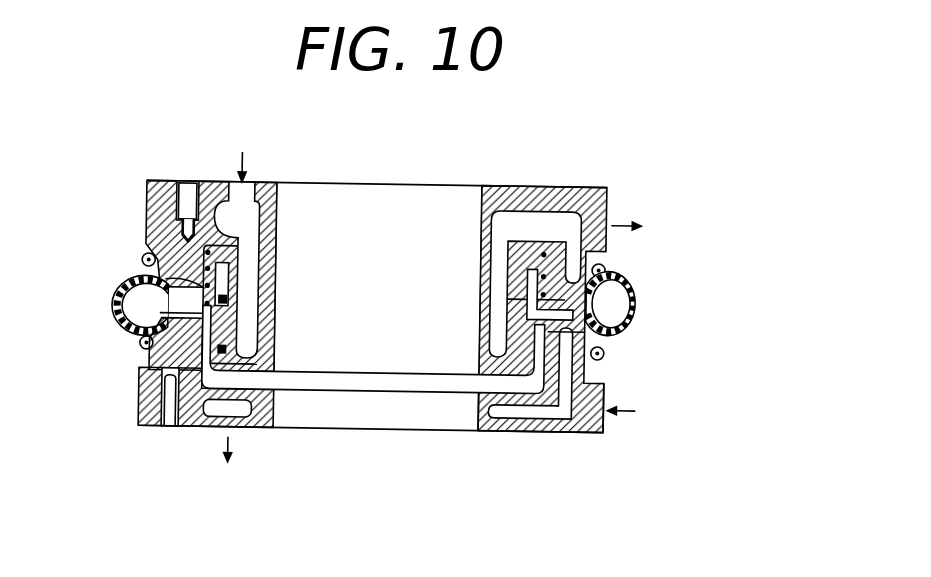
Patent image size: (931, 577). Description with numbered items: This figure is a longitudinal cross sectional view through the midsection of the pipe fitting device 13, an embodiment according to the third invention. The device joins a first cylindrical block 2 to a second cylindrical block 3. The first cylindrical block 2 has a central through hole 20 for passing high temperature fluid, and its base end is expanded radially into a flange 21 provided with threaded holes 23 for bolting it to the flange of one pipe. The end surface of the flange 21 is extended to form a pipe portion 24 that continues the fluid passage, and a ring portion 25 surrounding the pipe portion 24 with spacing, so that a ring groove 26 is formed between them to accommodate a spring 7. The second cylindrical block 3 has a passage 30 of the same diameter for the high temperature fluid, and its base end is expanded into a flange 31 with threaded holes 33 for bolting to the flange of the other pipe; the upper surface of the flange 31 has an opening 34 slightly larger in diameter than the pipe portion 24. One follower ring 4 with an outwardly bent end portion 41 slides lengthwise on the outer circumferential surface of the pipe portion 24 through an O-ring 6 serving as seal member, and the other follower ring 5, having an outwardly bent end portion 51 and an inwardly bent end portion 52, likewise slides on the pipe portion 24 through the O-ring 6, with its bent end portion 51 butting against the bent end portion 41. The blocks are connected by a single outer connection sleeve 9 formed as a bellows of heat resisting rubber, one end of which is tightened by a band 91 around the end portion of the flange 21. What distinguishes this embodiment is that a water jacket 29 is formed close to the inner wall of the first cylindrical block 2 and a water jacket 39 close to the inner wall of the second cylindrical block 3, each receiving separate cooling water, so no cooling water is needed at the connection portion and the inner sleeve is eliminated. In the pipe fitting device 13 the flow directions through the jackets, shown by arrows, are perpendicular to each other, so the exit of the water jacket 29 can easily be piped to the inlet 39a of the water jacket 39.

The pipe fitting device 13 is at (467, 146).
The first cylindrical block 2 is at (508, 186).
The through hole 20 is at (403, 186).
The flange 21 is at (150, 209).
The threaded holes 23 is at (186, 188).
The ring groove 26 is at (277, 216).
The follower ring 4 is at (217, 258).
The O-ring 6 is at (237, 298).
The inwardly bent end portion 52 is at (245, 373).
The ring portion 25 is at (142, 263).
The outwardly bent end portion 41 is at (135, 302).
The outwardly bent end portion 51 is at (130, 331).
The follower ring 5 is at (175, 373).
The flange 31 is at (147, 419).
The threaded holes 33 is at (176, 426).
The passage 30 is at (398, 432).
The second cylindrical block 3 is at (488, 434).
The spring 7 is at (527, 252).
The water jacket 29 is at (607, 218).
The pipe portion 24 is at (482, 339).
The band 91 is at (603, 267).
The outer connection sleeve 9 is at (636, 300).
The opening 34 is at (555, 366).
The water jacket 39 is at (605, 377).
The inlet 39a is at (598, 415).